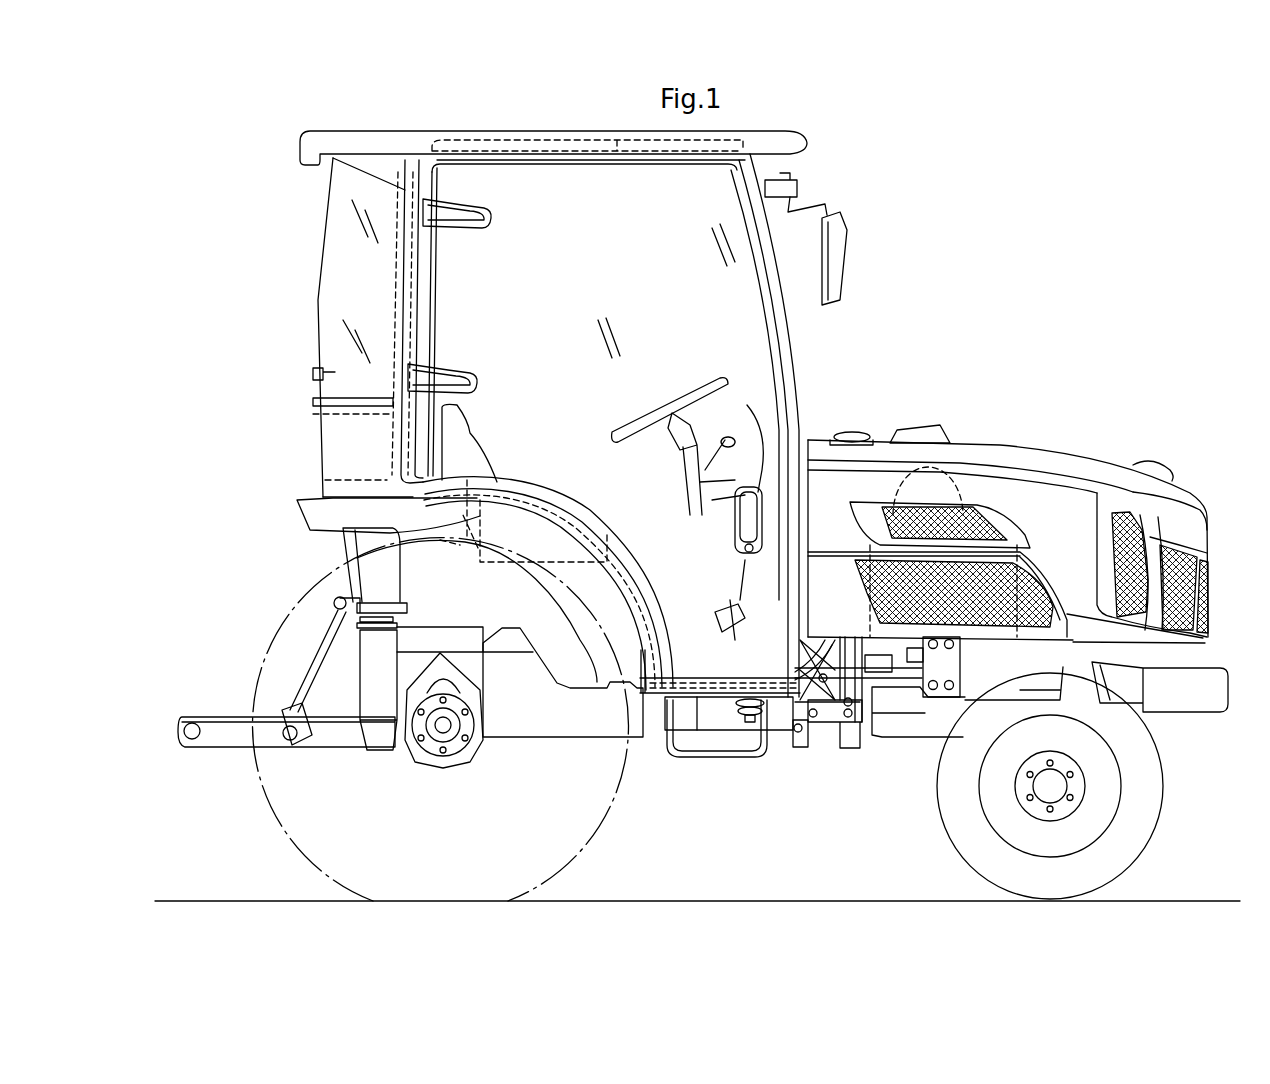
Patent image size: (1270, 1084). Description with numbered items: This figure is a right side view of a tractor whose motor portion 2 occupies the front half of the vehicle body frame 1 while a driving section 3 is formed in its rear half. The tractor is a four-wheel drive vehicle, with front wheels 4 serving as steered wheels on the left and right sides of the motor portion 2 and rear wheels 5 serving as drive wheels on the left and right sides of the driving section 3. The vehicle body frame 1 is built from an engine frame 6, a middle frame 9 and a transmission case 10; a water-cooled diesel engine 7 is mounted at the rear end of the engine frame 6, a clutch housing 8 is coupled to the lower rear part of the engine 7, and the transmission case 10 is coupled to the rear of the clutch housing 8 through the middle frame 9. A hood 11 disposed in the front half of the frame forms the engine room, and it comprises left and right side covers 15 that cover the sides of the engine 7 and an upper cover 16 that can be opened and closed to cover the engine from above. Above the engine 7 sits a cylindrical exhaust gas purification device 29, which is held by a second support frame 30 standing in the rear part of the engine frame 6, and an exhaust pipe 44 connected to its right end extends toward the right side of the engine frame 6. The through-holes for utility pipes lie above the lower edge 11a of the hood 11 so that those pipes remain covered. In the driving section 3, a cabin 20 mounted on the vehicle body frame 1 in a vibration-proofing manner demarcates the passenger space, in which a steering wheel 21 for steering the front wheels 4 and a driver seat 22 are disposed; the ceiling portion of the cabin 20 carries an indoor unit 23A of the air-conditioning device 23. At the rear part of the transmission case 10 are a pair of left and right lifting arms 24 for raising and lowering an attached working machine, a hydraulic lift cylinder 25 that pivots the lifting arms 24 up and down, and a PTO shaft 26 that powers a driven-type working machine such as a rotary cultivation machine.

The vehicle body frame 1 is at (575, 755).
The motor portion 2 is at (848, 768).
The driving section 3 is at (753, 350).
The front wheels 4 is at (1140, 850).
The rear wheels 5 is at (273, 817).
The engine frame 6 is at (1207, 713).
The engine 7 is at (930, 737).
The clutch housing 8 is at (797, 737).
The middle frame 9 is at (720, 723).
The transmission case 10 is at (510, 733).
The hood 11 is at (1008, 544).
The lower edge 11a is at (968, 640).
The side covers 15 is at (820, 585).
The upper cover 16 is at (1033, 446).
The cabin 20 is at (795, 400).
The steering wheel 21 is at (652, 405).
The driver seat 22 is at (477, 443).
The air-conditioning device 23 is at (652, 156).
The indoor unit 23A is at (553, 184).
The lifting arms 24 is at (343, 600).
The hydraulic lift cylinder 25 is at (470, 598).
The PTO shaft 26 is at (360, 687).
The exhaust gas purification device 29 is at (947, 463).
The second support frame 30 is at (923, 683).
The exhaust pipe 44 is at (1053, 670).